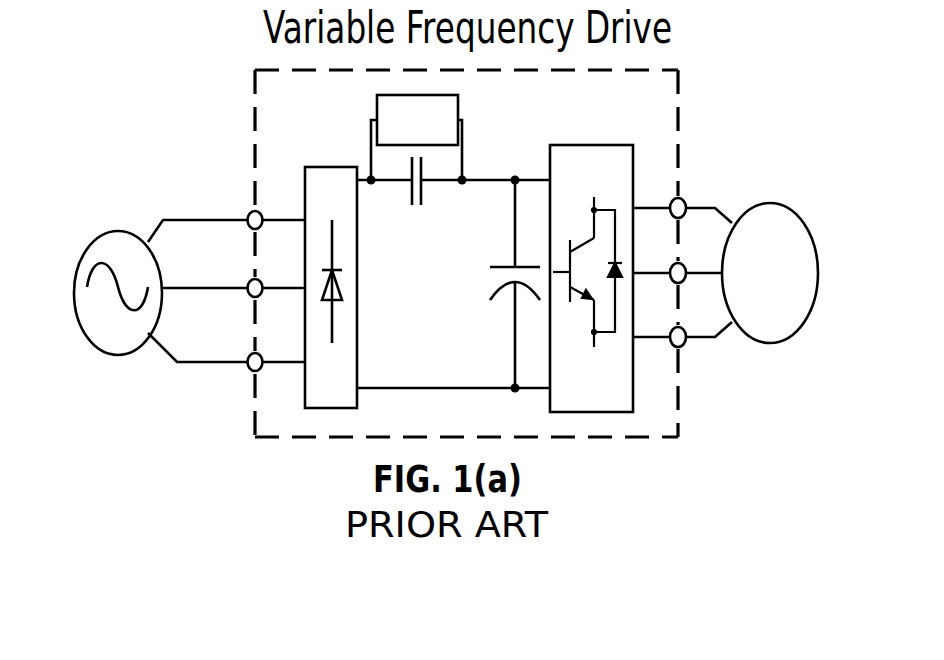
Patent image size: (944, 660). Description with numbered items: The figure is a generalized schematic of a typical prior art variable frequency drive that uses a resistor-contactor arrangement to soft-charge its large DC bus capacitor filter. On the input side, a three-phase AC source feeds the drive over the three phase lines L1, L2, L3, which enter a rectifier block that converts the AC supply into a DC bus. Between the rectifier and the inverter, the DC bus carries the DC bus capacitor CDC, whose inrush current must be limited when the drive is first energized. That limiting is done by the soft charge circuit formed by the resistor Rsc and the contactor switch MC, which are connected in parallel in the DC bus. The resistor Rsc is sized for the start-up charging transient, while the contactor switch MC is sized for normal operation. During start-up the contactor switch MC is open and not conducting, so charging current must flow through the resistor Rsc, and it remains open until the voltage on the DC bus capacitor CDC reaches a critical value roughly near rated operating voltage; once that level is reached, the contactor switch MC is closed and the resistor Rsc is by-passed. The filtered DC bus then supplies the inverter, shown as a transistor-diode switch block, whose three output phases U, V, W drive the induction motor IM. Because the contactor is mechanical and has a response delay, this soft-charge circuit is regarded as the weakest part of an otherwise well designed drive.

The input phase line L1 is at (226, 206).
The input phase line L2 is at (233, 267).
The input phase line L3 is at (226, 340).
The resistor Rsc is at (416, 137).
The contactor switch MC is at (415, 211).
The DC bus capacitor CDC is at (494, 284).
The output phase U is at (682, 190).
The output phase V is at (677, 253).
The output phase W is at (682, 317).
The induction motor IM is at (770, 273).